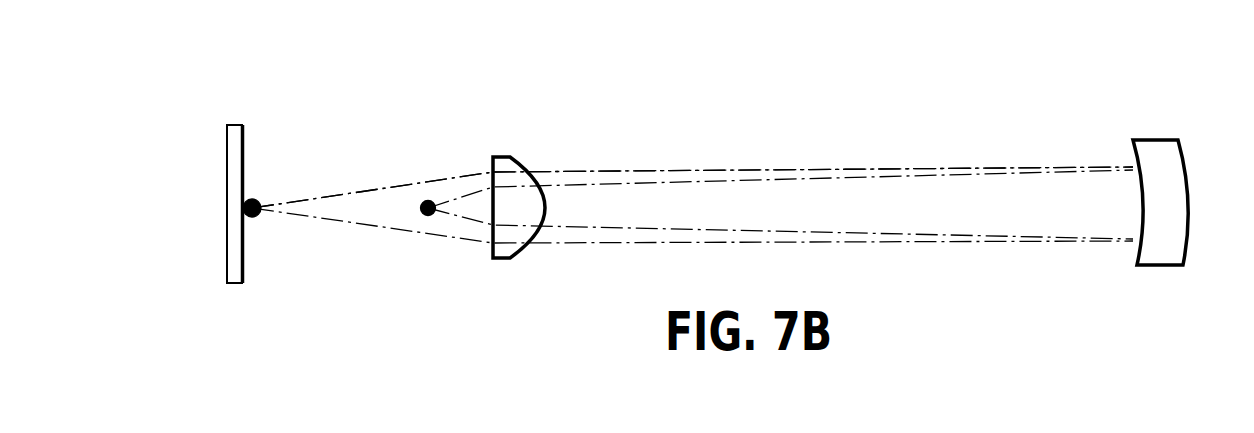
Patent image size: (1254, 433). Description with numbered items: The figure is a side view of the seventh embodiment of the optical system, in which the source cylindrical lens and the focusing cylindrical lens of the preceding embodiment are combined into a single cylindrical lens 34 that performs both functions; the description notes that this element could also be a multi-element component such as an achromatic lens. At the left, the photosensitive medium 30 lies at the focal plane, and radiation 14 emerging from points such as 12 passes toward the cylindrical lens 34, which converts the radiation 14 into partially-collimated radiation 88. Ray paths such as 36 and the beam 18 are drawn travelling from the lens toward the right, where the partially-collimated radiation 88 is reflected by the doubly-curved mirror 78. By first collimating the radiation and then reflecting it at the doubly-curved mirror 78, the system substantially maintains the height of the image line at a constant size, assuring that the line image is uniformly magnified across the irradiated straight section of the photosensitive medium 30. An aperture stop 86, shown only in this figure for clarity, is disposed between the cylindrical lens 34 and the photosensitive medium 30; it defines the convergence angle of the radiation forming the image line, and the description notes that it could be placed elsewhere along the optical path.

The object point 12 is at (423, 212).
The radiation 14 is at (477, 220).
The light beam 18 is at (748, 170).
The photosensitive medium 30 is at (243, 152).
The cylindrical lens 34 is at (517, 162).
The light ray 36 is at (435, 181).
The doubly-curved mirror 78 is at (1180, 167).
The aperture stop 86 is at (395, 187).
The partially-collimated radiation 88 is at (837, 178).